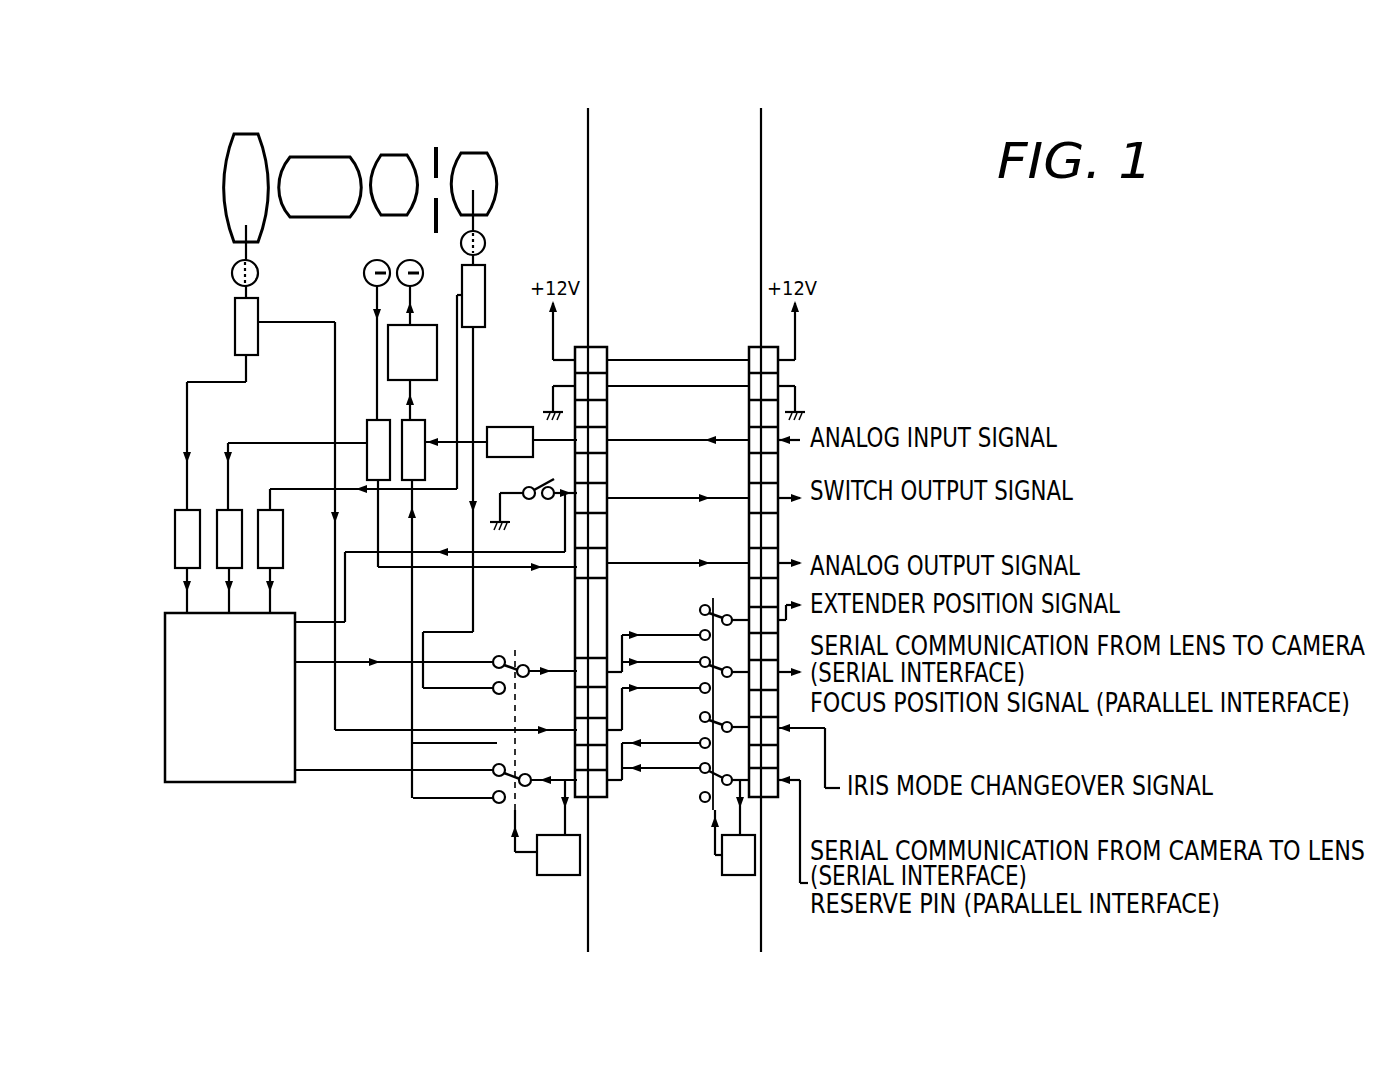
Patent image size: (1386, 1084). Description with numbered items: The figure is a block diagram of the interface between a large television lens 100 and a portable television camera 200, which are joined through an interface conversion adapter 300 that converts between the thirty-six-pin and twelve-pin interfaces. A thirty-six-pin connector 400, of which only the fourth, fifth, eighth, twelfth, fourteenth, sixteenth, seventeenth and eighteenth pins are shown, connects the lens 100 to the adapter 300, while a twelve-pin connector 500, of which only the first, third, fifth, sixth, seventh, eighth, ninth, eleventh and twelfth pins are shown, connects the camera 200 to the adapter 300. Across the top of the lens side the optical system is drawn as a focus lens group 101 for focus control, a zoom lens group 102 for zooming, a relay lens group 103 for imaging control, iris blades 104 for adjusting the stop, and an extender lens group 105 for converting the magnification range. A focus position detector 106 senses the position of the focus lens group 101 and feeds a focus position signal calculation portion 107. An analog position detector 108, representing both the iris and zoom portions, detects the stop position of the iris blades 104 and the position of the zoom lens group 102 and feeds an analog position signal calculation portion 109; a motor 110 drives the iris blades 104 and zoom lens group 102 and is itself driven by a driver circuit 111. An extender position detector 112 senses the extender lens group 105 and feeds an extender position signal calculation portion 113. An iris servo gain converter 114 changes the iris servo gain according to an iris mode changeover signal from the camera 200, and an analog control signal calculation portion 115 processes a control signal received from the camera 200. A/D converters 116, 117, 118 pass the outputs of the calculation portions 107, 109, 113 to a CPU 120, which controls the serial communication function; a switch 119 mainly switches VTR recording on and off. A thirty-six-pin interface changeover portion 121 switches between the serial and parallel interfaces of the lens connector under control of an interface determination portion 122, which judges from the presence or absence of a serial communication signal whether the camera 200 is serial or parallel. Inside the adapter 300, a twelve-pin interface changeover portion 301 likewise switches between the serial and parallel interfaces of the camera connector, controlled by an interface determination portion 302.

The large television lens 100 is at (476, 541).
The portable television camera 200 is at (926, 963).
The 36-pin/12-pin interface conversion adapter 300 is at (716, 541).
The focus lens group 101 is at (250, 133).
The zoom lens group 102 is at (330, 158).
The relay lens group 103 is at (393, 157).
The iris blades 104 is at (438, 146).
The extender lens group 105 is at (483, 156).
The focus position detector 106 is at (231, 273).
The focus position signal calculation portion 107 is at (234, 308).
The analog position detector 108 is at (363, 273).
The analog position signal calculation portion 109 is at (371, 420).
The motor 110 is at (411, 259).
The driver circuit 111 is at (428, 325).
The extender position detector 112 is at (486, 240).
The extender position signal calculation portion 113 is at (485, 301).
The iris servo gain converter 114 is at (415, 420).
The analog control signal calculation portion 115 is at (500, 427).
The A/D converter 116 is at (175, 540).
The A/D converter 117 is at (217, 510).
The A/D converter 118 is at (283, 540).
The switch 119 is at (536, 505).
The CPU 120 is at (237, 783).
The 36-pin interface changeover portion 121 is at (527, 662).
The interface determination portion 122 is at (555, 876).
The 12-pin interface changeover portion 301 is at (727, 615).
The interface determination portion 302 is at (739, 876).
The 36-pin connector 400 is at (599, 346).
The 12-pin connector 500 is at (757, 346).